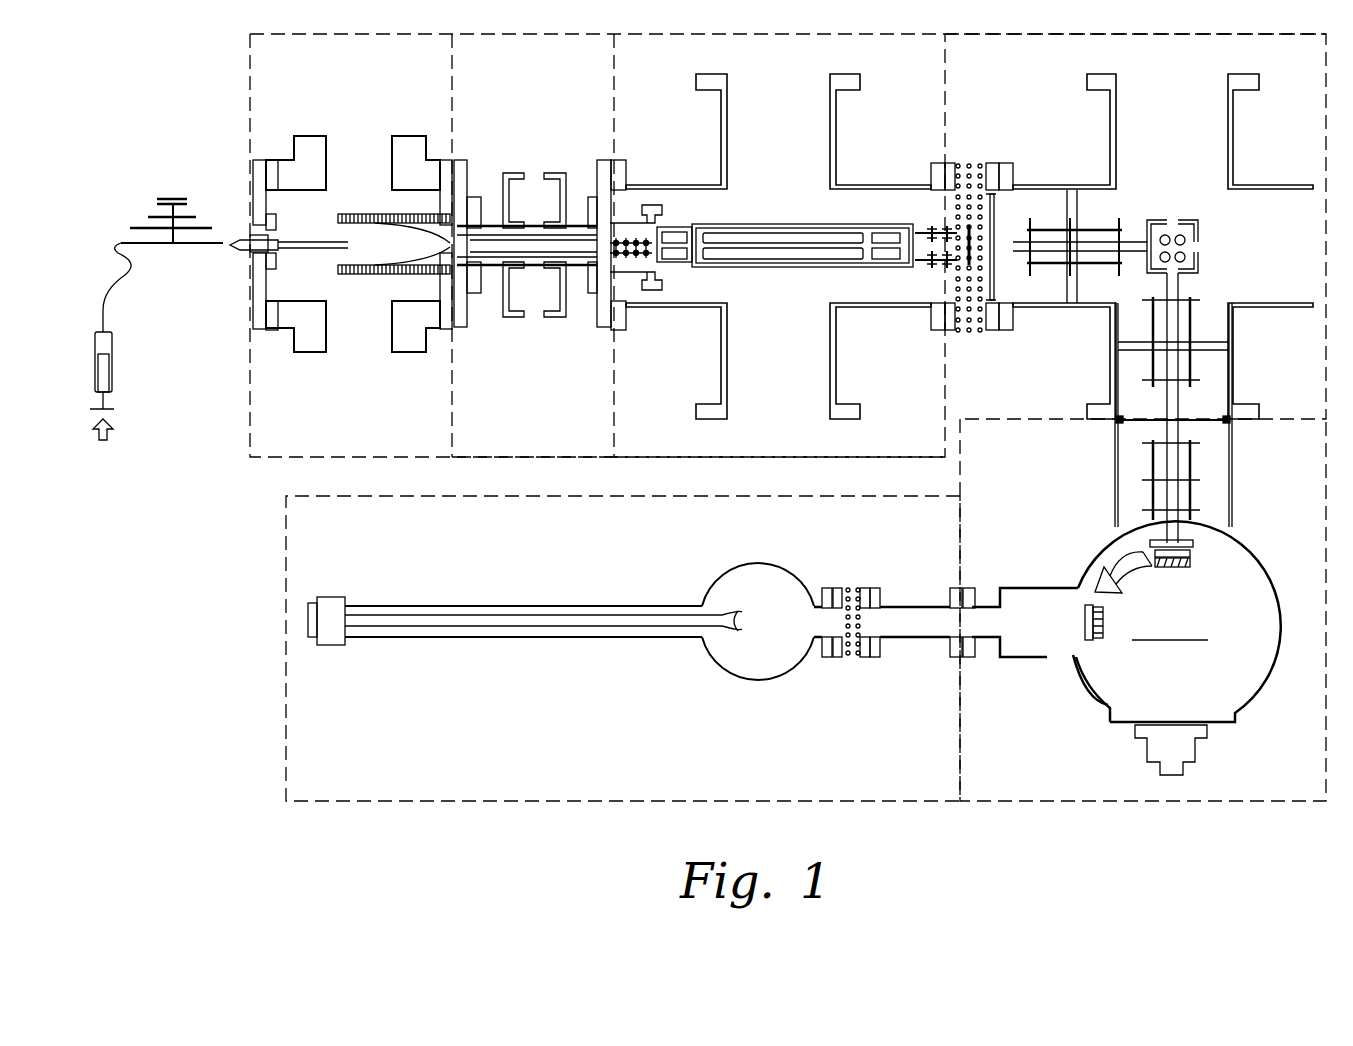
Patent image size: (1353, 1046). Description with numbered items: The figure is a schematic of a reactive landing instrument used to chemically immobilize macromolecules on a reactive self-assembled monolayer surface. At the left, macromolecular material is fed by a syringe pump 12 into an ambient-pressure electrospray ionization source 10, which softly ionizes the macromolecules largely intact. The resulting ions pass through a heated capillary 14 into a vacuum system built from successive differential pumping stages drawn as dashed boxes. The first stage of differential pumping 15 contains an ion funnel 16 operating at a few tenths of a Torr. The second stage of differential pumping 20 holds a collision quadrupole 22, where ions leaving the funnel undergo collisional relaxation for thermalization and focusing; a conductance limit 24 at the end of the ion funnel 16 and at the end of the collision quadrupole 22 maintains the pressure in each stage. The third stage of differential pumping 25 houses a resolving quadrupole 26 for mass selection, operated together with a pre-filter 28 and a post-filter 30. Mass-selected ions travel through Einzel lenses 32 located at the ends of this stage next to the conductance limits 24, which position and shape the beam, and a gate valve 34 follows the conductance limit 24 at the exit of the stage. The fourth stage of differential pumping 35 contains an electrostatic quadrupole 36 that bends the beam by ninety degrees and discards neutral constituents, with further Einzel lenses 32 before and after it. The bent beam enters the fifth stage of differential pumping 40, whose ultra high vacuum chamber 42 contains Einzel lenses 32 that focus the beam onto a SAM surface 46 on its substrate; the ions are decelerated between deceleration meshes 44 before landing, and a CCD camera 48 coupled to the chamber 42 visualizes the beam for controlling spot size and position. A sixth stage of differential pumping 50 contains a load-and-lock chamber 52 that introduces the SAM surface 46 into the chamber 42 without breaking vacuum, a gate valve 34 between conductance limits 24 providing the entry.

The ionization source 10 is at (169, 160).
The syringe pump 12 is at (111, 366).
The heated capillary 14 is at (239, 240).
The first stage of differential pumping 15 is at (332, 69).
The ion funnel 16 is at (370, 276).
The second stage of differential pumping 20 is at (513, 69).
The collision quadrupole 22 is at (539, 234).
The conductance limit 24 is at (255, 160).
The third stage of differential pumping 25 is at (761, 69).
The resolving quadrupole 26 is at (788, 240).
The pre-filter 28 is at (682, 262).
The post-filter 30 is at (888, 245).
The Einzel lenses 32 is at (628, 240).
The gate valve 34 is at (969, 163).
The fourth stage of differential pumping 35 is at (1147, 69).
The electrostatic quadrupole 36 is at (1198, 250).
The fifth stage of differential pumping 40 is at (986, 467).
The ultra high vacuum chamber 42 is at (1257, 690).
The deceleration meshes 44 is at (1190, 562).
The SAM surface 46 is at (972, 235).
The CCD camera 48 is at (1198, 750).
The sixth stage of differential pumping 50 is at (602, 532).
The load-and-lock chamber 52 is at (728, 677).